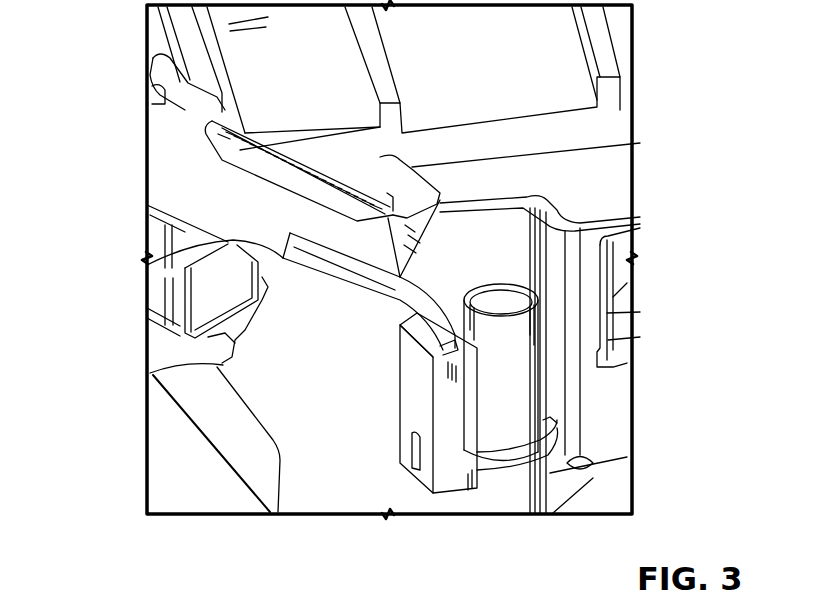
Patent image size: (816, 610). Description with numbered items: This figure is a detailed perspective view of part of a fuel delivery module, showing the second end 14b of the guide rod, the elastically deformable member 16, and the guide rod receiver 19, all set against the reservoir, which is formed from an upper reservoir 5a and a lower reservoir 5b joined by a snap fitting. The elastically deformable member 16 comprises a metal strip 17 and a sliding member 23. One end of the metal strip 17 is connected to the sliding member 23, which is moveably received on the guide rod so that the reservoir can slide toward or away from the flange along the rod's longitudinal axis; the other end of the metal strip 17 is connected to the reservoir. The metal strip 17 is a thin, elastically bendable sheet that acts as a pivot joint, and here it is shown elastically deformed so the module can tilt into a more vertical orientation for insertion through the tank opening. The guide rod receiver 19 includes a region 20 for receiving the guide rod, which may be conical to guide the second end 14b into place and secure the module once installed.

The upper reservoir 5a is at (272, 70).
The second end of the guide rod 14b is at (233, 133).
The elastically deformable member 16 is at (175, 177).
The metal strip 17 is at (147, 265).
The sliding member 23 is at (267, 193).
The region for receiving the guide rod 20 is at (513, 290).
The guide rod receiver 19 is at (513, 375).
The lower reservoir 5b is at (336, 473).